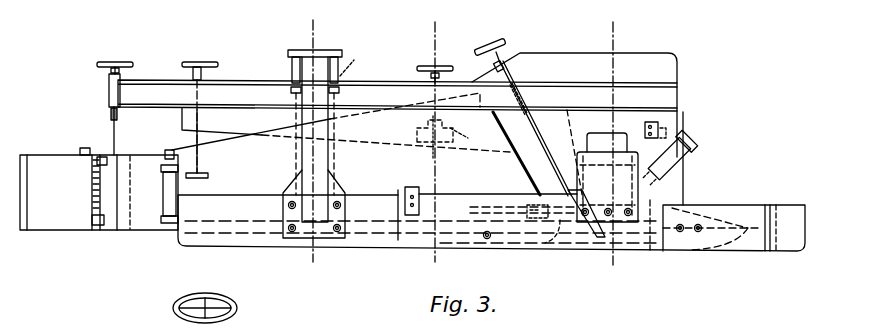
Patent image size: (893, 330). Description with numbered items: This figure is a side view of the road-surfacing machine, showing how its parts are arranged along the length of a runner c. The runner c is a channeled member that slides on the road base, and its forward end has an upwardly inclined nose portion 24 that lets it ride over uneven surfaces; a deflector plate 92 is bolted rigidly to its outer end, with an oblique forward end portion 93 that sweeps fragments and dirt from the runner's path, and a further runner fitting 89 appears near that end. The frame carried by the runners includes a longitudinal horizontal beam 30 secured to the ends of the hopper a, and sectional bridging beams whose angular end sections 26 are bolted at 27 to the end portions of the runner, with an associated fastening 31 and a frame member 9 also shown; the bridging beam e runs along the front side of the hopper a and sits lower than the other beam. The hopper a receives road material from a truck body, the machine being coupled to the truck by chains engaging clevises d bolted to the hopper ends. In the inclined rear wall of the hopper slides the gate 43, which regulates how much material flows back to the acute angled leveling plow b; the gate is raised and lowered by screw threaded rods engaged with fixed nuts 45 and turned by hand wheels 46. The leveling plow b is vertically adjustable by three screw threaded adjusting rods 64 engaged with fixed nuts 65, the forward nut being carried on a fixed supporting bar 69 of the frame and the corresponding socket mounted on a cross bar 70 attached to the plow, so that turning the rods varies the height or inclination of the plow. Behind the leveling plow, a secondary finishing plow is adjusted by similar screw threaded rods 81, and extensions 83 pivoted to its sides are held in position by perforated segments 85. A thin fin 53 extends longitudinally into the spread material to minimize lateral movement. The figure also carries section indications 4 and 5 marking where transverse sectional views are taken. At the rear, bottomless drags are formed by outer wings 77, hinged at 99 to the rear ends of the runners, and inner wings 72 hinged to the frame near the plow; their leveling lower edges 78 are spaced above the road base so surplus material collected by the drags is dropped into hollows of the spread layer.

The longitudinal horizontal beam 30 is at (237, 90).
The hopper a is at (668, 70).
The clevis d is at (662, 132).
The screw threaded adjusting rod 81 is at (113, 118).
The screw threaded adjusting rod 64 is at (196, 67).
The hinge 99 is at (170, 153).
The supporting bar or beam 69 is at (244, 128).
The angular end section 26 is at (319, 62).
The bolt 31 is at (728, 158).
The section line 5 is at (424, 36).
The section line 4 is at (604, 33).
The leveling plow b is at (385, 133).
The cross bar 70 is at (420, 162).
The fixed nut 65 is at (470, 139).
The frame 9 is at (303, 159).
The bolt 27 is at (337, 206).
The extension 83 is at (43, 233).
The leveling lower edge 78 is at (73, 233).
The inner wing 72 is at (111, 233).
The outer wing 77 is at (141, 233).
The segment 85 is at (80, 150).
The fin 53 is at (467, 195).
The fixed nut 45 is at (504, 60).
The hand wheel 46 is at (496, 40).
The gate 43 is at (574, 112).
The bridging beam e is at (686, 188).
The deflector plate 92 is at (740, 205).
The oblique forward end portion 93 is at (780, 205).
The runner c is at (681, 248).
The nose portion 24 is at (722, 250).
The stop 89 is at (770, 251).